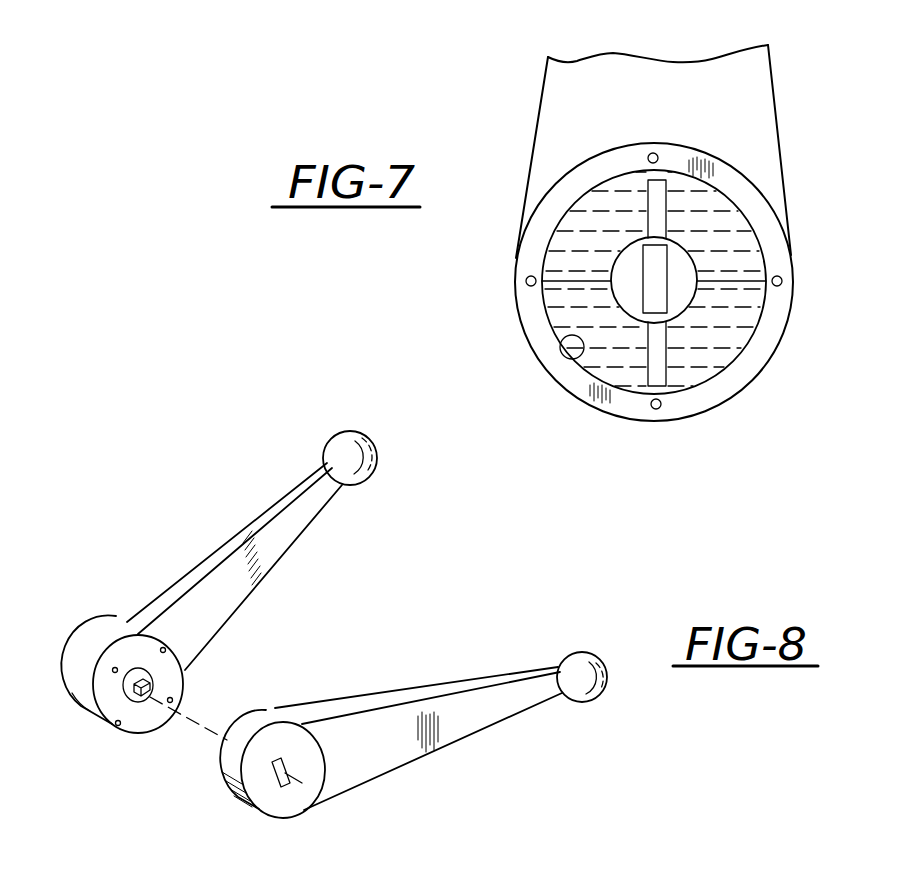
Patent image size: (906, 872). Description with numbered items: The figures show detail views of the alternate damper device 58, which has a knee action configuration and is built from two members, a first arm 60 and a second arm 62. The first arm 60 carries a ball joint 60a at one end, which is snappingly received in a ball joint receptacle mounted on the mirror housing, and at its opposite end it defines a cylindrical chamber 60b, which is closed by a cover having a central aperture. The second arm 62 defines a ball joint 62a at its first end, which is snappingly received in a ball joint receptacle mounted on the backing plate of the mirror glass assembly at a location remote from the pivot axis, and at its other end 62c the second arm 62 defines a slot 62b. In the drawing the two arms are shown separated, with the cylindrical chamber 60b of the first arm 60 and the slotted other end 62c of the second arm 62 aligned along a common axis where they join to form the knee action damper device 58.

In FIG. 8, the damper device 58 is at (400, 587).
In FIG. 7, the first arm 60 is at (537, 137).
In FIG. 8, the first arm 60 is at (219, 555).
In FIG. 8, the ball joint 60a is at (336, 443).
In FIG. 7, the cylindrical chamber 60b is at (557, 338).
In FIG. 8, the second arm 62 is at (359, 694).
In FIG. 8, the ball joint 62a is at (590, 658).
In FIG. 8, the slot 62b is at (293, 767).
In FIG. 8, the other end 62c is at (223, 800).